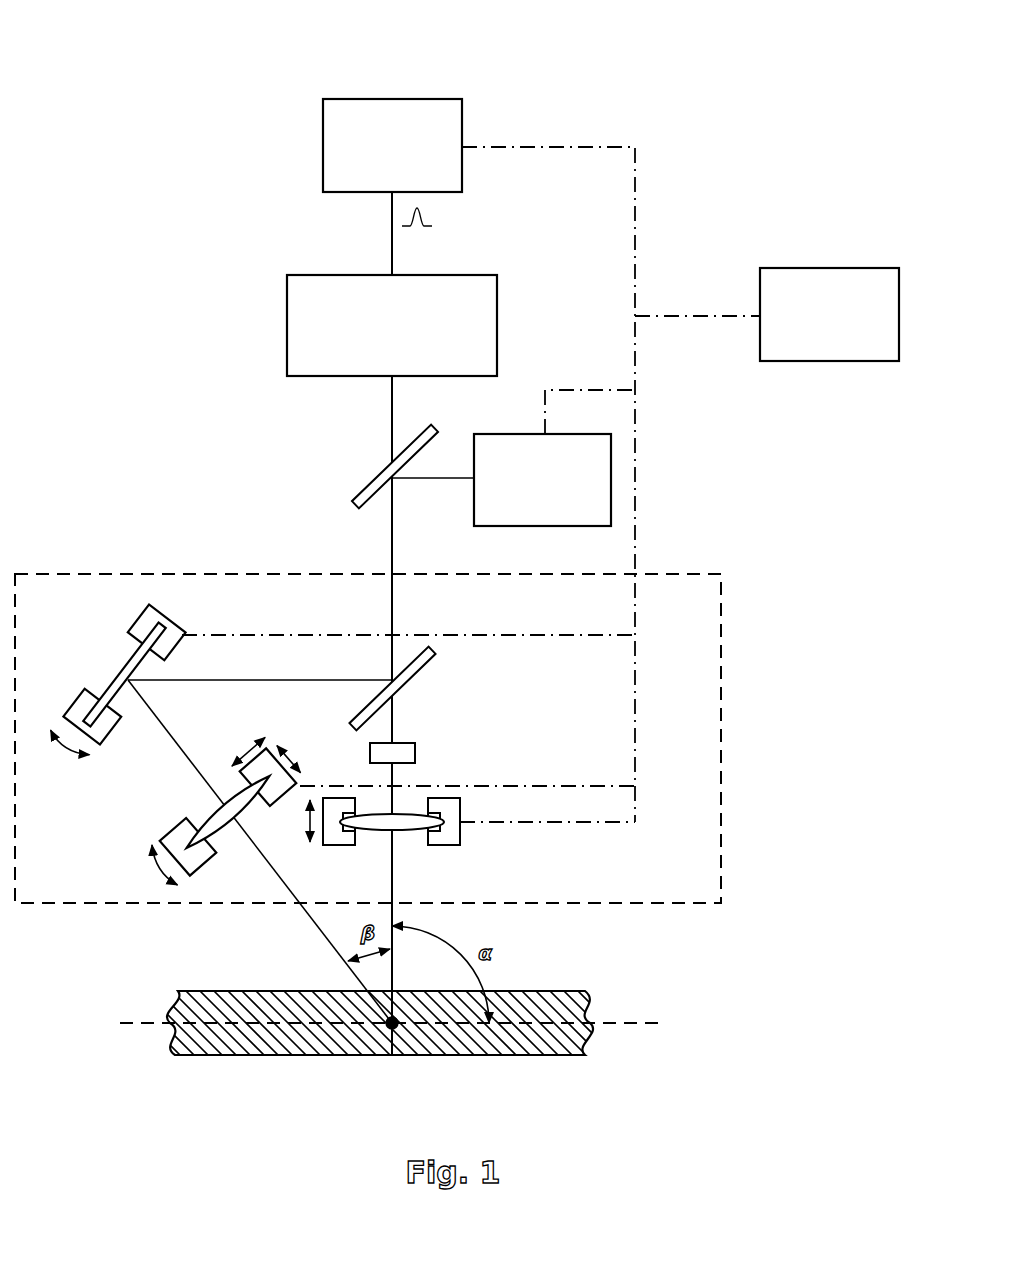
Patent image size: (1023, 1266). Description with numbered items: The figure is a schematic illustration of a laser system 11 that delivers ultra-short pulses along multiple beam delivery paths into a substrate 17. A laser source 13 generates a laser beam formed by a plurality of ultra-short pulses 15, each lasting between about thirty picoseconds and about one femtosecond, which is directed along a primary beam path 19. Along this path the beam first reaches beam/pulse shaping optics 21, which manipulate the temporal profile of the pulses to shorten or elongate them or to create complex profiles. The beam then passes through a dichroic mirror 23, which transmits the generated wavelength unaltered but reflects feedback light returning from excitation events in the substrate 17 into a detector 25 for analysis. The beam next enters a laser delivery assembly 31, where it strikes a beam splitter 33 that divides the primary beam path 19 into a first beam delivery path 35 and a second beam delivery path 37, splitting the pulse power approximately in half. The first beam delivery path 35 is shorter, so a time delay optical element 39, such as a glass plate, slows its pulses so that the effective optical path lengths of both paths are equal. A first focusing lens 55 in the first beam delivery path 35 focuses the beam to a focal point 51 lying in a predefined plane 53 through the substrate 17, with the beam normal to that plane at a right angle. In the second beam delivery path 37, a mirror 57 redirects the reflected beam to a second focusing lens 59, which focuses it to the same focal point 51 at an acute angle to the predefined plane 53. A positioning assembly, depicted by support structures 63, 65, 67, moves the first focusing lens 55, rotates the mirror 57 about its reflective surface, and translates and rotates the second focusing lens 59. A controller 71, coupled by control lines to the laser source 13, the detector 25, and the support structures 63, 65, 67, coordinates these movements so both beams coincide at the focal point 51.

The laser system 11 is at (150, 44).
The laser source 13 is at (462, 100).
The ultra-short pulses 15 is at (440, 213).
The substrate 17 is at (585, 993).
The primary beam path 19 is at (392, 248).
The beam/pulse shaping optics 21 is at (497, 275).
The dichroic mirror 23 is at (357, 498).
The detector 25 is at (612, 450).
The laser delivery assembly 31 is at (721, 600).
The beam splitter 33 is at (432, 648).
The first beam delivery path 35 is at (393, 713).
The second beam delivery path 37 is at (288, 680).
The time delay optical element 39 is at (415, 752).
The focal point 51 is at (392, 1055).
The predefined plane 53 is at (625, 1022).
The first focusing lens 55 is at (398, 815).
The mirror 57 is at (128, 660).
The second focusing lens 59 is at (212, 818).
The support structure 63 is at (462, 815).
The support structure 65 is at (148, 617).
The support structure 67 is at (175, 838).
The controller 71 is at (865, 268).